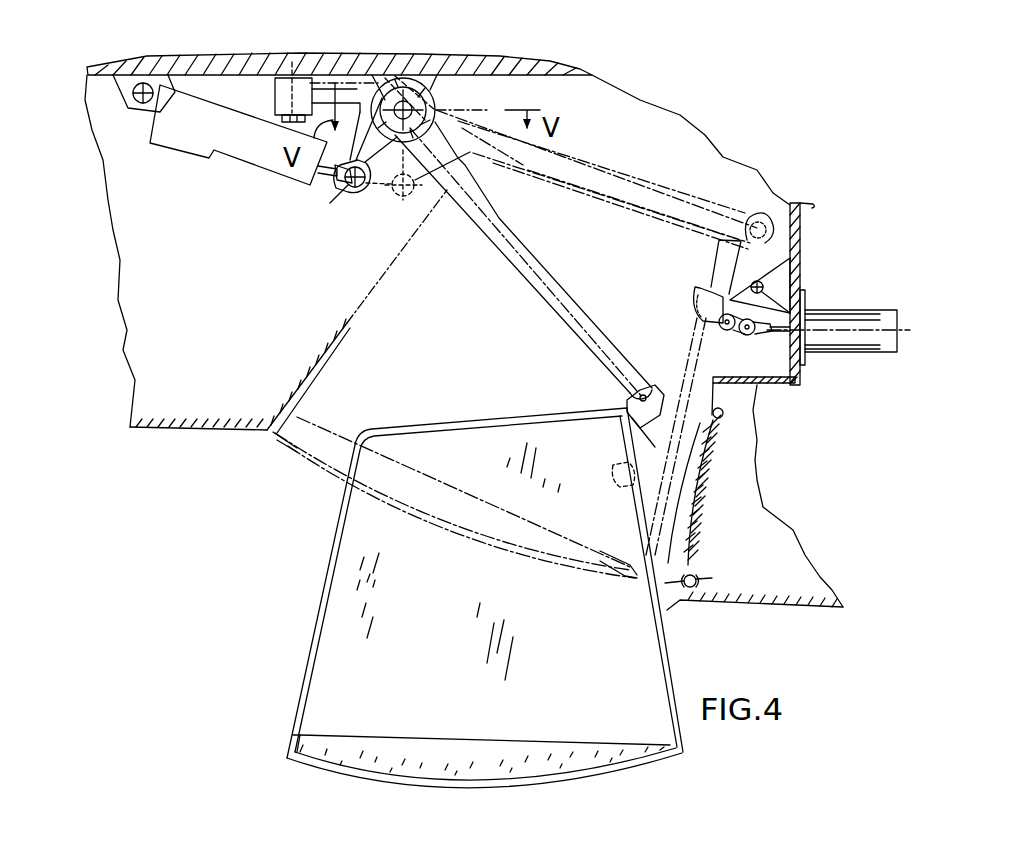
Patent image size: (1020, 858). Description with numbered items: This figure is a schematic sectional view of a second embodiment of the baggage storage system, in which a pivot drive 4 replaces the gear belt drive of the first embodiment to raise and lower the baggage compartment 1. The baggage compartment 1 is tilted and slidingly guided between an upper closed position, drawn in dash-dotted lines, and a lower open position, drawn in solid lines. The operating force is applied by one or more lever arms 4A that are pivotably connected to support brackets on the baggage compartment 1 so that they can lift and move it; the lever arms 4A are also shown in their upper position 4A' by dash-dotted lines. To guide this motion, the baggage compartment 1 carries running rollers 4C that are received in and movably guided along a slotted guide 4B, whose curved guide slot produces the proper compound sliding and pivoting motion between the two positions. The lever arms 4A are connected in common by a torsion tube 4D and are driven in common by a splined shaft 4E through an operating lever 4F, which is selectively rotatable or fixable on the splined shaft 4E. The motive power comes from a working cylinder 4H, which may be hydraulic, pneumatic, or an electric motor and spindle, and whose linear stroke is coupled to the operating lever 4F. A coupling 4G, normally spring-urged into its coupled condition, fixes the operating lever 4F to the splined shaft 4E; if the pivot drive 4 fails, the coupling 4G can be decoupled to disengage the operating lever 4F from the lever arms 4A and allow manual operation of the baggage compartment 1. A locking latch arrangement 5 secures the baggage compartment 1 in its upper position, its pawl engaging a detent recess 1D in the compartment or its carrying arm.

The baggage compartment 1 is at (310, 611).
The detent recess 1D is at (637, 475).
The pivot drive 4 is at (800, 145).
The lever arms 4A is at (529, 284).
The upper position of the lever arms 4A' is at (594, 332).
The slotted guide 4B is at (712, 457).
The running rollers 4C is at (698, 570).
The torsion tube 4D is at (443, 103).
The splined shaft 4E is at (427, 60).
The operating lever 4F is at (343, 183).
The coupling 4G is at (388, 58).
The working cylinder 4H is at (193, 143).
The locking latch arrangement 5 is at (815, 245).